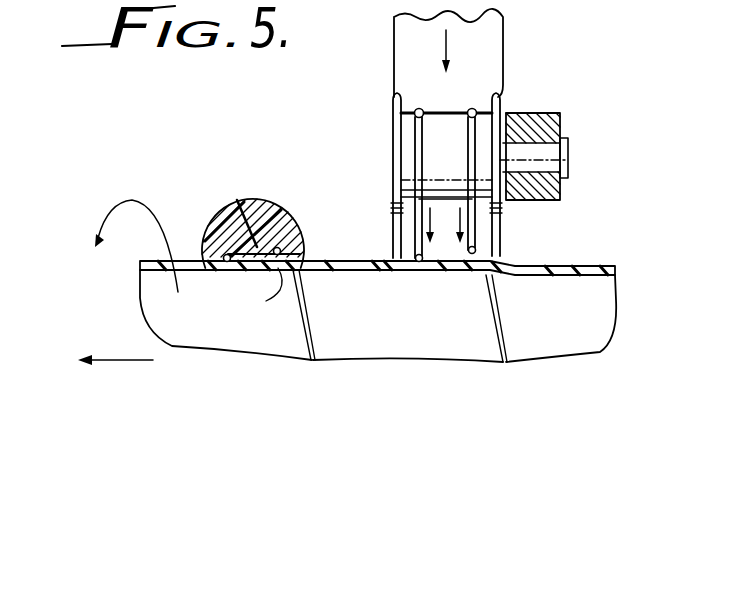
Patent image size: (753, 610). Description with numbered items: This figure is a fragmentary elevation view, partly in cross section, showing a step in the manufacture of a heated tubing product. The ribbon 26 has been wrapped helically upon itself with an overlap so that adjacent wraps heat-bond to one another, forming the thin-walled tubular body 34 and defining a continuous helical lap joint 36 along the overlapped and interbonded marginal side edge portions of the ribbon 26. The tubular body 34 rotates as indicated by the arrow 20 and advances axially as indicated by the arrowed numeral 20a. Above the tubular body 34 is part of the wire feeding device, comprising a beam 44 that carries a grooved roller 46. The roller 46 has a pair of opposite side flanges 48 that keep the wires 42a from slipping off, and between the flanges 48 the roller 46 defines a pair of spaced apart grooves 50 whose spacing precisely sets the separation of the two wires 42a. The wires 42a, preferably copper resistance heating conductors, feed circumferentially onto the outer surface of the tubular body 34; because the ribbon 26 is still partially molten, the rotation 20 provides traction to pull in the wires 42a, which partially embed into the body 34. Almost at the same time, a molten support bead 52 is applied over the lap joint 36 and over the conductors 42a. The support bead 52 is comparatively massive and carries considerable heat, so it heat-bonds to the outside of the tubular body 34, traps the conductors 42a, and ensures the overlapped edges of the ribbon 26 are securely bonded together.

The arrow indicating rotation of the tubing product 20 is at (124, 200).
The arrowed numeral indicating axial velocity 20a is at (122, 362).
The ribbon 26 is at (354, 272).
The thin-walled tubular body 34 is at (587, 265).
The continuous helical lap joint 36 is at (237, 200).
The wire 42a is at (230, 268).
The beam 44 is at (553, 113).
The grooved roller 46 is at (386, 113).
The side flange 48 is at (393, 95).
The groove 50 is at (471, 160).
The support bead 52 is at (503, 27).